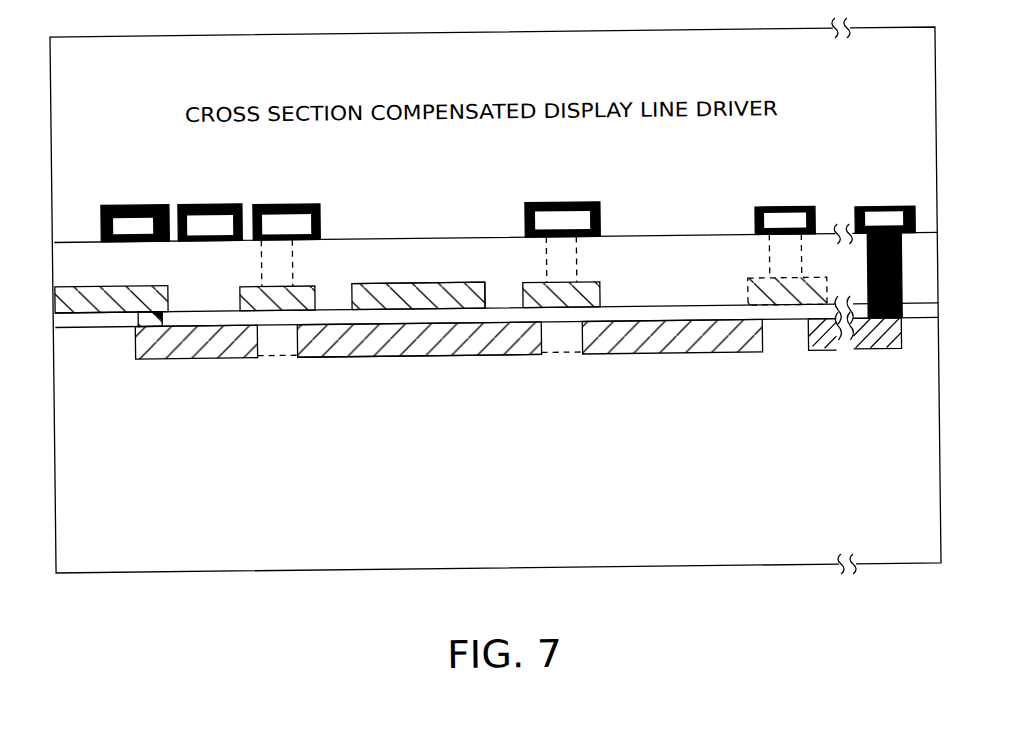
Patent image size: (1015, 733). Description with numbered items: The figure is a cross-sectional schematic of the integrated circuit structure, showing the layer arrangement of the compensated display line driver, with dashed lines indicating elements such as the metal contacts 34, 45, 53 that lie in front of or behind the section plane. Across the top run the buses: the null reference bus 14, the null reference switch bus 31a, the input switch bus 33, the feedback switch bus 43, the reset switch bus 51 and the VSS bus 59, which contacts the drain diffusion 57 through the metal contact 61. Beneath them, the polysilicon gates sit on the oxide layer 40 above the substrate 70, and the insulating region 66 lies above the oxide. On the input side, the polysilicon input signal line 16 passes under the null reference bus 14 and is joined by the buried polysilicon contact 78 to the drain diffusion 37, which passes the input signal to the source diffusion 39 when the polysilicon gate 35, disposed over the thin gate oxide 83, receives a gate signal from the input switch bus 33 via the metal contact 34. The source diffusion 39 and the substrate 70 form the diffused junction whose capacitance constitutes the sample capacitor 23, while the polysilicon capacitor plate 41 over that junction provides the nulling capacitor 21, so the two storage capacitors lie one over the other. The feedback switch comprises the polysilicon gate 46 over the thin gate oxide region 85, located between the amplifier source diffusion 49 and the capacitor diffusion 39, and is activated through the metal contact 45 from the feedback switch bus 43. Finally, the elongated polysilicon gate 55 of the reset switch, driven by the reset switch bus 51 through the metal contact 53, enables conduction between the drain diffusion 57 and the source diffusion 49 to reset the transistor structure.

The null reference bus 14 is at (123, 201).
The null reference switch bus 31a is at (193, 202).
The input switch bus 33 is at (278, 202).
The feedback switch bus 43 is at (571, 203).
The reset switch bus 51 is at (773, 210).
The VSS bus 59 is at (879, 211).
The metal contact 61 is at (902, 272).
The insulating layer 66 is at (919, 250).
The oxide layer 40 is at (928, 316).
The substrate 70 is at (923, 465).
The polysilicon input signal line 16 is at (107, 283).
The buried polysilicon contact 78 is at (138, 319).
The drain diffusion 37 is at (186, 354).
The thin gate oxide 83 is at (286, 348).
The source diffusion 39 is at (356, 351).
The sample capacitor 23 is at (501, 355).
The thin gate oxide region 85 is at (570, 348).
The source diffusion 49 is at (654, 354).
The drain diffusion 57 is at (867, 354).
The metal contact 34 is at (274, 258).
The polysilicon gate 35 is at (307, 285).
The polysilicon capacitor plate 41 is at (408, 282).
The nulling capacitor 21 is at (465, 282).
The metal contact 45 is at (572, 258).
The polysilicon gate 46 is at (600, 286).
The polysilicon gate 55 is at (755, 283).
The metal contact 53 is at (798, 256).